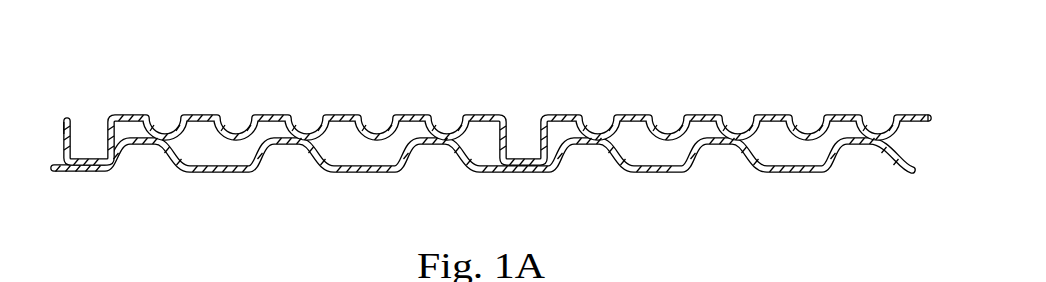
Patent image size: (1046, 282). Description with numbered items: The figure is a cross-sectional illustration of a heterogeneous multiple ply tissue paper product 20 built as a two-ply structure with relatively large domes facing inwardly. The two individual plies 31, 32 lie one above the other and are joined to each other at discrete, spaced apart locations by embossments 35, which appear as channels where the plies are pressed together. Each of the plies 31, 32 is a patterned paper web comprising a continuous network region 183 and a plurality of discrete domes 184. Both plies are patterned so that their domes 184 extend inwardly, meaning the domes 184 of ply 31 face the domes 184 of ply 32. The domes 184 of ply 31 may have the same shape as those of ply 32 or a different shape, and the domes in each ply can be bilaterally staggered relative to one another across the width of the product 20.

The heterogeneous multiple ply tissue paper product 20 is at (485, 129).
The ply 31 is at (63, 130).
The ply 32 is at (48, 183).
The embossments 35 is at (89, 144).
The continuous network region 183 is at (197, 116).
The discrete domes 184 is at (232, 118).